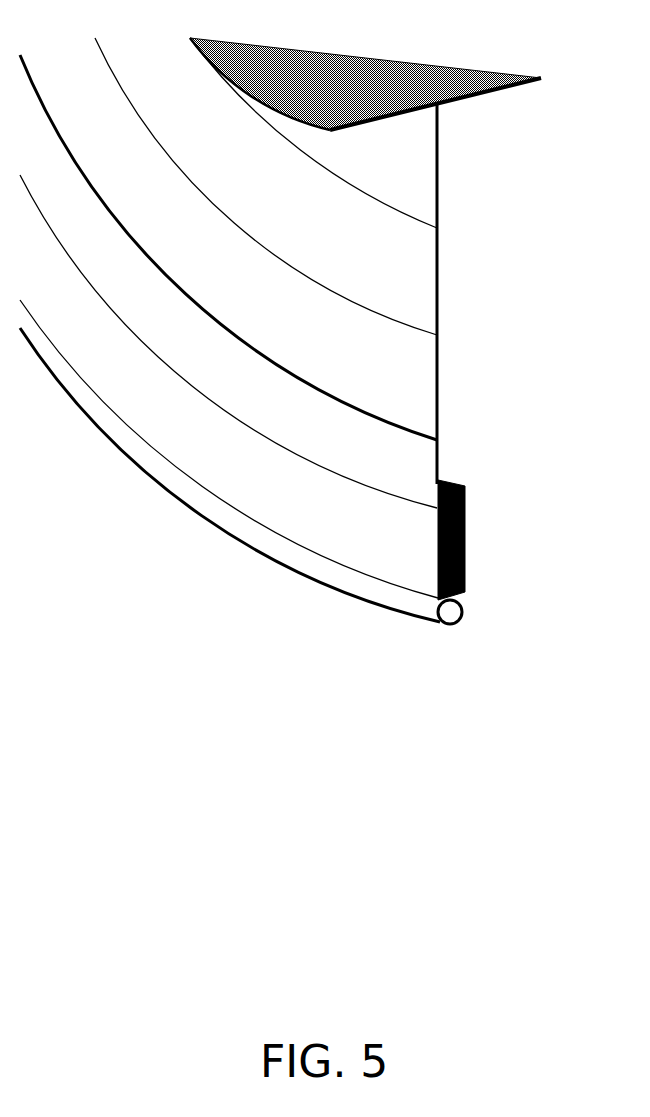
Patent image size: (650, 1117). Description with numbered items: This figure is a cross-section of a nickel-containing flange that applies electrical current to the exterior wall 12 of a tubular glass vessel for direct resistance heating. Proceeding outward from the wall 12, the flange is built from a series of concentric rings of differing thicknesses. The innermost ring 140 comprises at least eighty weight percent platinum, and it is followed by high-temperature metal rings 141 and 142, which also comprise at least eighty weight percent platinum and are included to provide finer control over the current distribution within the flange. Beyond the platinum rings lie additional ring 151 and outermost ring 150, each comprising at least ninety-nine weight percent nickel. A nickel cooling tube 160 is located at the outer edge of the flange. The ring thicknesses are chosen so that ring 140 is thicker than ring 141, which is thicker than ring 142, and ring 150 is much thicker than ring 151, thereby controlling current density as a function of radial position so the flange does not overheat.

The exterior wall 12 is at (483, 98).
The innermost ring 140 is at (440, 160).
The high-temperature metal ring 141 is at (440, 287).
The high-temperature metal ring 142 is at (440, 383).
The additional ring 151 is at (440, 460).
The outermost ring 150 is at (465, 537).
The cooling tube 160 is at (463, 620).